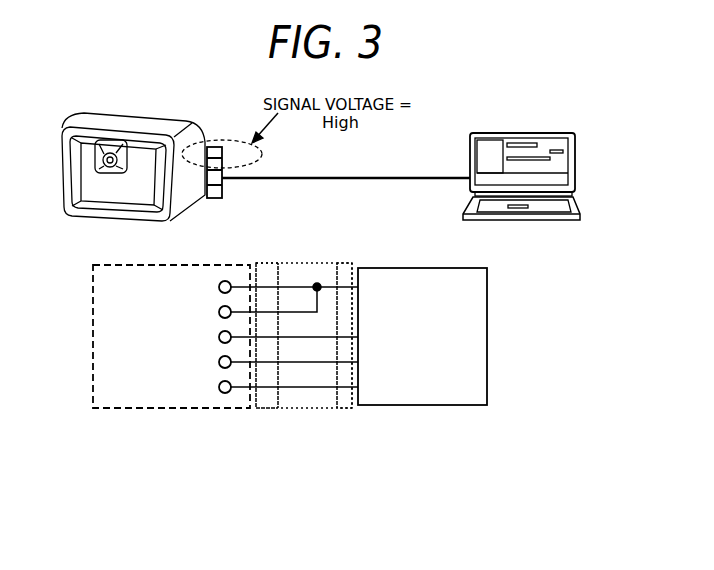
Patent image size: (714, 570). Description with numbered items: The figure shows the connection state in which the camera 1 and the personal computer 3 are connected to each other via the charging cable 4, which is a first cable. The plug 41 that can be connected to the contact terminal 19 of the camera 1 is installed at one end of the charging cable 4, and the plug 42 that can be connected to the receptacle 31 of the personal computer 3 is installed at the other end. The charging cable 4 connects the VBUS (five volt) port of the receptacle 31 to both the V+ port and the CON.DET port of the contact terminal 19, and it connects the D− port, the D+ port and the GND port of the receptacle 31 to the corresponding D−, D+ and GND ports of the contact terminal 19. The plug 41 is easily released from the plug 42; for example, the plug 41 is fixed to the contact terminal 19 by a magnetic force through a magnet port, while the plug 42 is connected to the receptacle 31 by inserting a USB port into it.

The camera 1 is at (122, 118).
The personal computer 3 is at (575, 170).
The charging cable 4 is at (357, 180).
The contact terminal 19 is at (212, 198).
The receptacle 31 is at (487, 332).
The plug 41 is at (268, 408).
The plug 42 is at (342, 408).